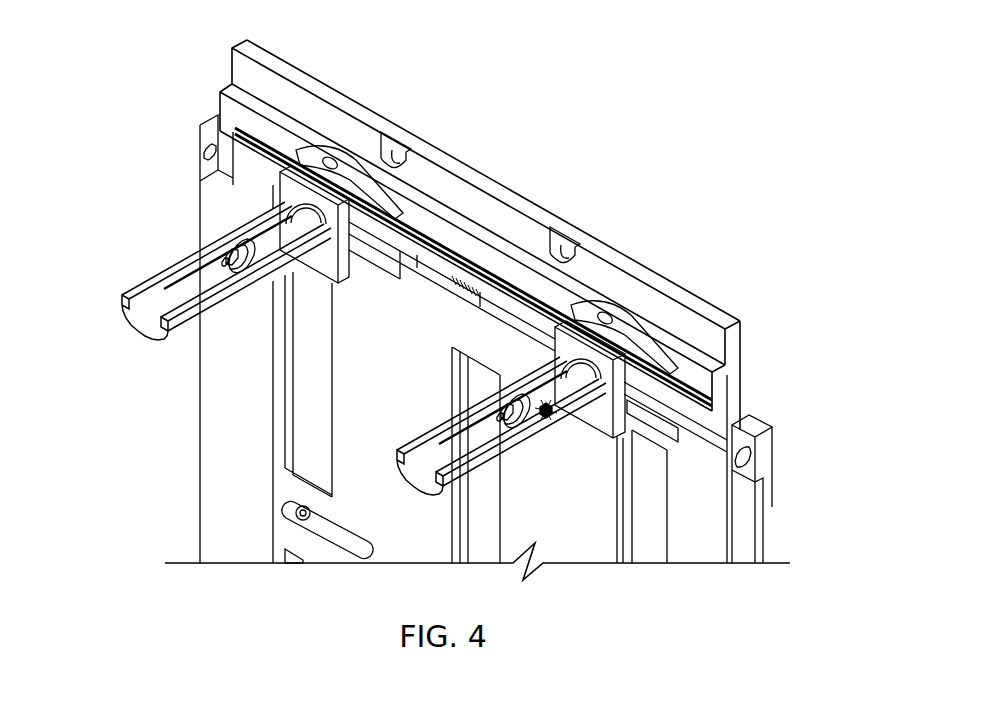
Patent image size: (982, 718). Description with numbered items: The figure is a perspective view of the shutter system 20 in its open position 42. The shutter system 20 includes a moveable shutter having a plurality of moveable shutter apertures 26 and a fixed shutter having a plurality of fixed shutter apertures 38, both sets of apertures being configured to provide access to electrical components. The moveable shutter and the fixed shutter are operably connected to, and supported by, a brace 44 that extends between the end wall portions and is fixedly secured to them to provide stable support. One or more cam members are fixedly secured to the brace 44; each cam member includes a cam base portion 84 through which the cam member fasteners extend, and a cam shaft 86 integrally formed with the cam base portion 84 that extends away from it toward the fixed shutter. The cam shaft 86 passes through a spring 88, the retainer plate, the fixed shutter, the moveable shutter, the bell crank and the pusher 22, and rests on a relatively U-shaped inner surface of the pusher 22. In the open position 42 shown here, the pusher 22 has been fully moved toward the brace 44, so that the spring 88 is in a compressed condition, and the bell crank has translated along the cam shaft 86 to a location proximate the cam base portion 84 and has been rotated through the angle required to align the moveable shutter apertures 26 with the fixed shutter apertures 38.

The shutter system 20 is at (489, 301).
The pusher 22 is at (171, 255).
The moveable shutter apertures 26 is at (452, 386).
The fixed shutter apertures 38 is at (448, 405).
The open position 42 is at (401, 202).
The brace 44 is at (568, 300).
The cam base portion 84 is at (708, 348).
The cam shaft 86 is at (546, 418).
The spring 88 is at (622, 326).